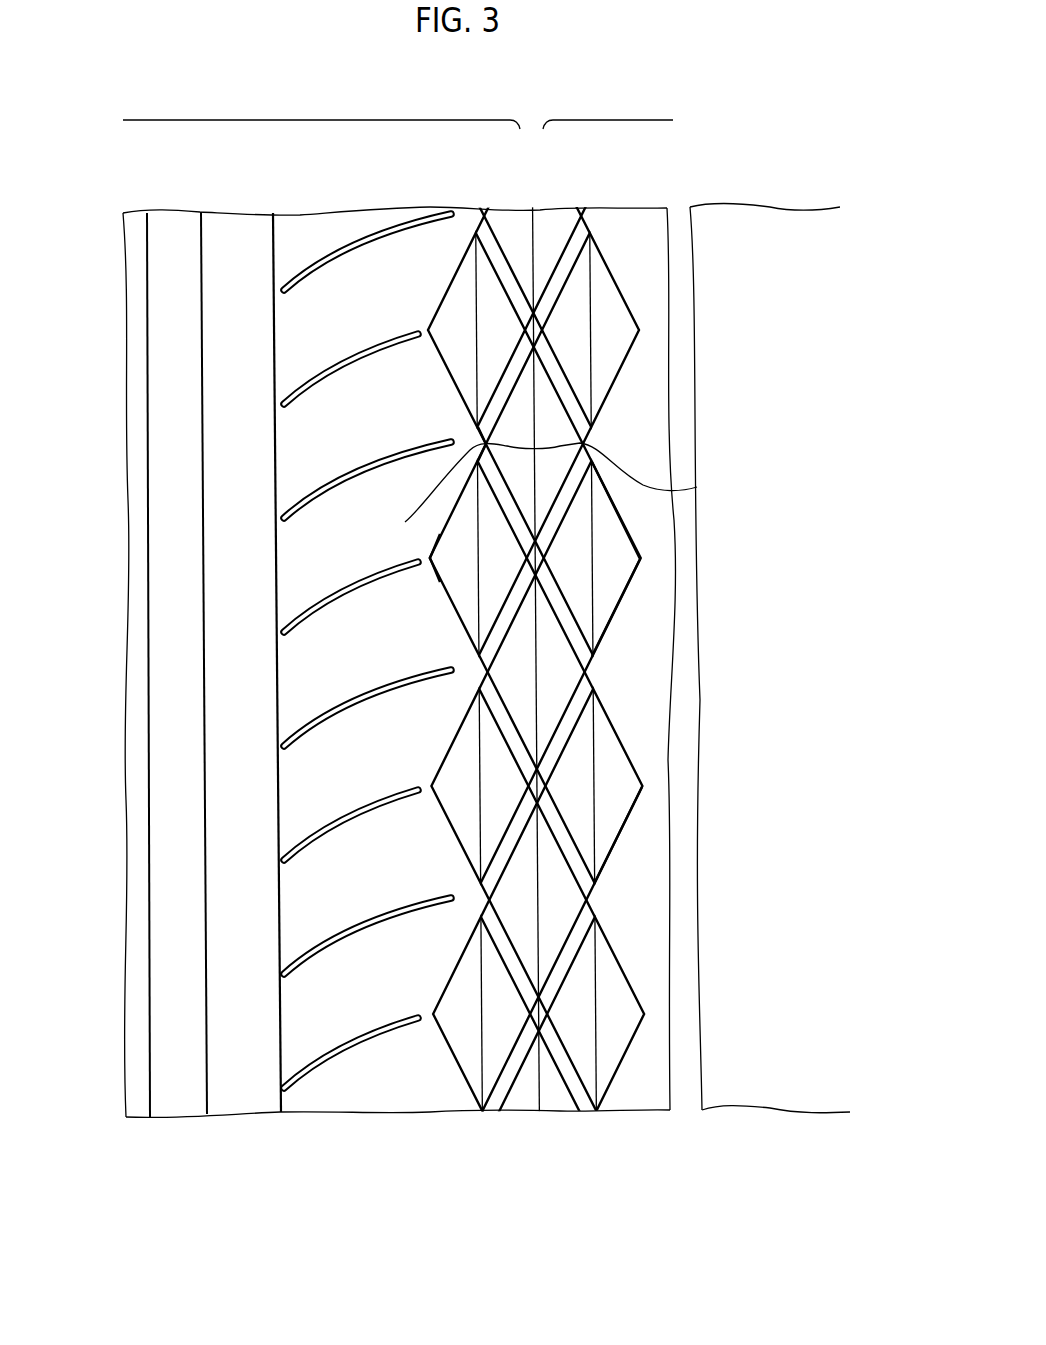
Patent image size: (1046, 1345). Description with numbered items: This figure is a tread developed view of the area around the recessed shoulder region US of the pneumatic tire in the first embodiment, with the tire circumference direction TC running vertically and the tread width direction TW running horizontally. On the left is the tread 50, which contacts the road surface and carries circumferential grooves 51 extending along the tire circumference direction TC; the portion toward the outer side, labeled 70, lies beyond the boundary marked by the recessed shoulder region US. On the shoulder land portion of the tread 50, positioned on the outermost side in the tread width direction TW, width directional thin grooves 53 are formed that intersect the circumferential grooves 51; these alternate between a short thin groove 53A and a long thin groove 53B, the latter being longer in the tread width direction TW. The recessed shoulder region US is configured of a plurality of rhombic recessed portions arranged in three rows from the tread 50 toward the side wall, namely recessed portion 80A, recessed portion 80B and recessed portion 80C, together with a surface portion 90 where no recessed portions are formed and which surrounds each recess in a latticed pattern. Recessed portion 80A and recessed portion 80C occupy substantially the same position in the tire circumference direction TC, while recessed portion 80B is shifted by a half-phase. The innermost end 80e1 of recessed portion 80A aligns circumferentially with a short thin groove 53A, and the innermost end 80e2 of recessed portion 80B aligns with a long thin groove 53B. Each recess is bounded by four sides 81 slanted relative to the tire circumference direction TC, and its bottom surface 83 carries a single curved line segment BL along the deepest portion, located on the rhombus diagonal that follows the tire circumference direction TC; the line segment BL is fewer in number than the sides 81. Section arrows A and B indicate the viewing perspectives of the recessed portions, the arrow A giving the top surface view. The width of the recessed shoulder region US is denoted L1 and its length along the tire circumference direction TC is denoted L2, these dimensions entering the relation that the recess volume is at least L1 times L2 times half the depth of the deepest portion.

The tread 50 is at (210, 120).
The second tread portion 70 is at (655, 118).
The recessed shoulder region US is at (531, 119).
The circumferential groove 51 is at (246, 1090).
The width directional thin grooves 53 is at (430, 1178).
The short thin groove 53A is at (338, 1061).
The long thin groove 53B is at (379, 925).
The recessed portion 80A is at (452, 319).
The recessed portion 80B is at (549, 222).
The recessed portion 80C is at (620, 320).
The end of the recessed portion 80A 80e1 is at (432, 559).
The end of the recessed portion 80B 80e2 is at (486, 444).
The surface portion 90 is at (495, 256).
The sides 81 is at (630, 533).
The bottom surface 83 is at (615, 812).
The line segment BL is at (567, 482).
The arrow A is at (592, 456).
The section line B is at (430, 779).
The tire circumference direction TC is at (70, 614).
The tread width direction TW is at (244, 1215).
The width of the recessed shoulder region L1 is at (436, 1020).
The length of the recessed shoulder region L2 is at (823, 212).